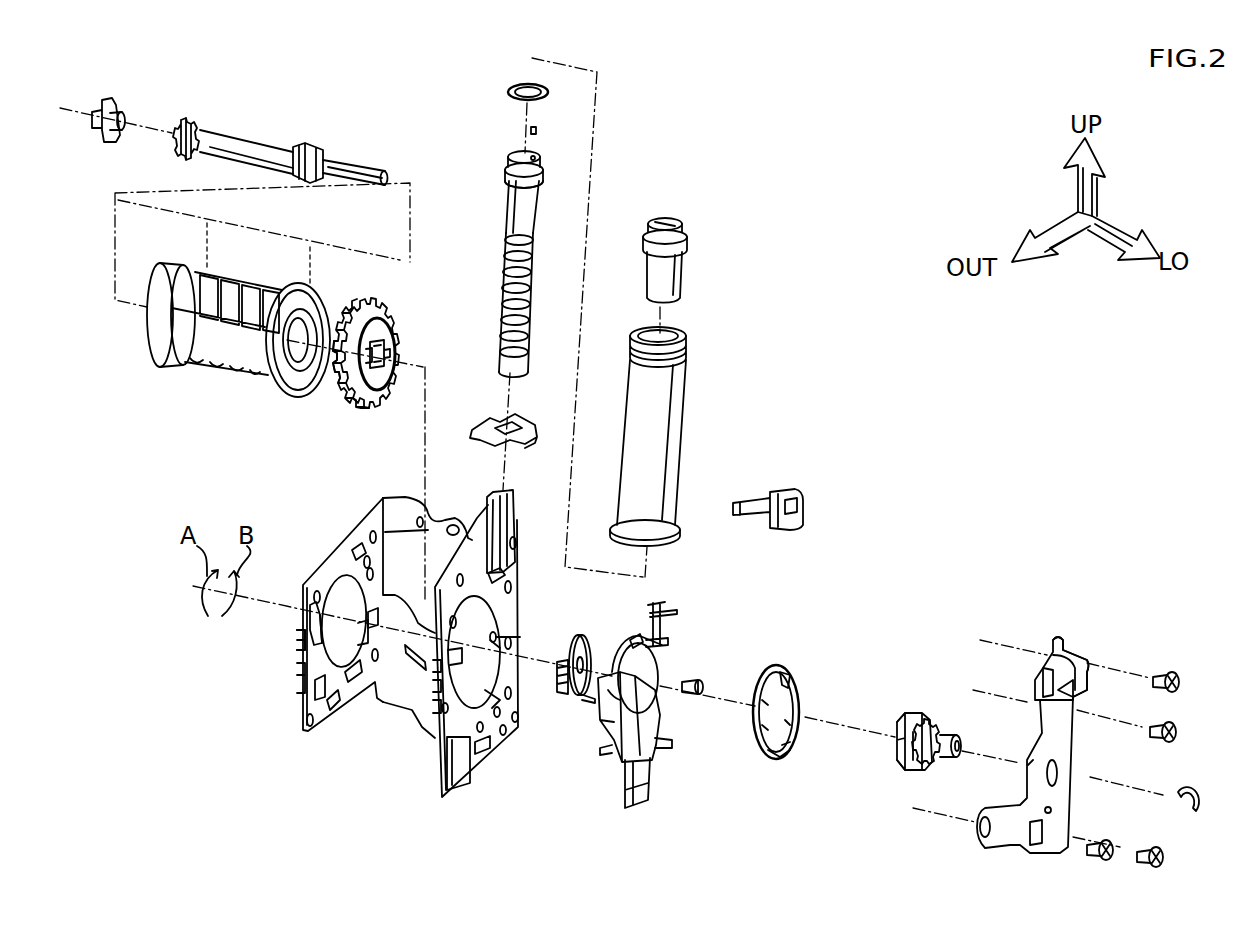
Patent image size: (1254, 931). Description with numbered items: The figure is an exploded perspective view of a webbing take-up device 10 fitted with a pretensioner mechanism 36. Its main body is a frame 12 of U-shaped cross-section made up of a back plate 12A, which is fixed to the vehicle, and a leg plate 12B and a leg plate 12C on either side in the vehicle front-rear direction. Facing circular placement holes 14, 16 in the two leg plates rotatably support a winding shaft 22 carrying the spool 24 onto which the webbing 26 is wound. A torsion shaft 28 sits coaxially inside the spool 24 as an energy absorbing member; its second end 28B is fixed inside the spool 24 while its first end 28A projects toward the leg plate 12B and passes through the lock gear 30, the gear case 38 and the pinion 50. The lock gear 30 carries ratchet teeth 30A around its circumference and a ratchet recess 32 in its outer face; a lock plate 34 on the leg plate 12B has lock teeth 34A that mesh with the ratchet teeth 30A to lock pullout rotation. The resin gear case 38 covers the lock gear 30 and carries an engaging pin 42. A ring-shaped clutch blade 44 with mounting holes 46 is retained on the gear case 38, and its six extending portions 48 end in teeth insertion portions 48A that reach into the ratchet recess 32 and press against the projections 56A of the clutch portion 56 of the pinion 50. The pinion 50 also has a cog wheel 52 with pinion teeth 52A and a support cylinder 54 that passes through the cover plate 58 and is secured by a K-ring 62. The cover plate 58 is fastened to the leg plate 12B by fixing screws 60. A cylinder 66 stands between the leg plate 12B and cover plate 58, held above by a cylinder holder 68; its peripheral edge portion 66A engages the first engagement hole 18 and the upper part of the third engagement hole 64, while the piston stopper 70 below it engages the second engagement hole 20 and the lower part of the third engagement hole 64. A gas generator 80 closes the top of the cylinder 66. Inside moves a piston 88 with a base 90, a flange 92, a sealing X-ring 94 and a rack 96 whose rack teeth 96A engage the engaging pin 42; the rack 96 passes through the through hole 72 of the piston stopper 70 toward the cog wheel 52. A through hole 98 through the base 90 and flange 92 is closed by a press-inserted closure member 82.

The webbing take-up device 10 is at (875, 208).
The frame 12 is at (405, 626).
The back plate 12A is at (415, 715).
The leg plate 12B is at (490, 762).
The leg plate 12C is at (330, 562).
The placement hole 14 is at (500, 648).
The placement hole 16 is at (300, 658).
The first engagement hole 18 is at (505, 565).
The second engagement hole 20 is at (508, 582).
The winding shaft 22 is at (260, 130).
The spool 24 is at (220, 372).
The webbing 26 is at (207, 245).
The torsion shaft 28 is at (283, 148).
The first end 28A is at (365, 165).
The second end 28B is at (185, 118).
The lock gear 30 is at (364, 353).
The ratchet teeth 30A is at (340, 395).
The ratchet recess 32 is at (388, 343).
The lock plate 34 is at (571, 671).
The lock teeth 34A is at (575, 698).
The pretensioner mechanism 36 is at (948, 500).
The gear case 38 is at (665, 706).
The engaging pin 42 is at (668, 640).
The clutch blade 44 is at (783, 693).
The mounting holes 46 is at (757, 740).
The extending portions 48 is at (790, 690).
The teeth insertion portions 48A is at (792, 735).
The pinion 50 is at (919, 710).
The cog wheel 52 is at (935, 720).
The pinion teeth 52A is at (935, 768).
The support cylinder 54 is at (962, 745).
The clutch portion 56 is at (900, 725).
The projections 56A is at (900, 765).
The cover plate 58 is at (1054, 745).
The fixing screws 60 is at (1180, 730).
The K-ring 62 is at (1195, 808).
The third engagement hole 64 is at (1078, 695).
The cylinder 66 is at (680, 444).
The peripheral edge portion 66A is at (682, 536).
The cylinder holder 68 is at (775, 490).
The piston stopper 70 is at (498, 410).
The through hole 72 is at (515, 410).
The gas generator 80 is at (685, 270).
The closure member 82 is at (540, 130).
The piston 88 is at (506, 150).
The base 90 is at (534, 158).
The flange 92 is at (505, 173).
The X-ring 94 is at (508, 92).
The rack 96 is at (508, 210).
The rack teeth 96A is at (504, 282).
The through hole 98 is at (542, 172).